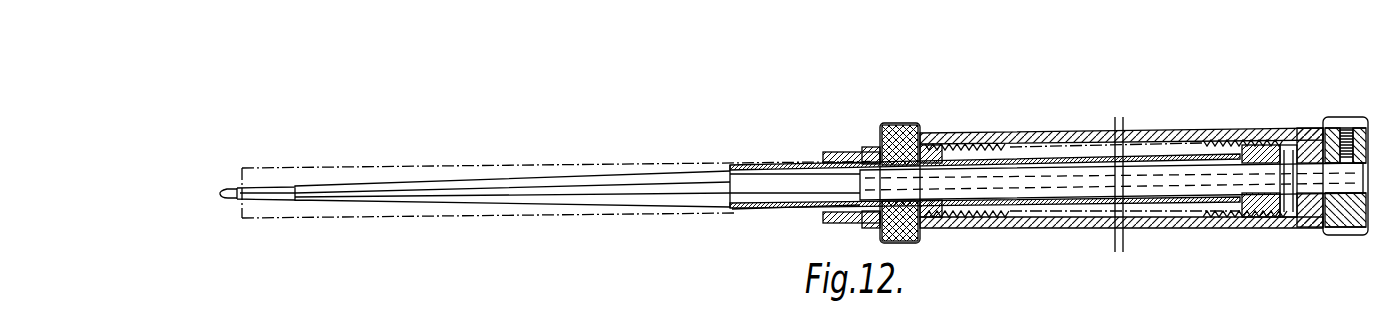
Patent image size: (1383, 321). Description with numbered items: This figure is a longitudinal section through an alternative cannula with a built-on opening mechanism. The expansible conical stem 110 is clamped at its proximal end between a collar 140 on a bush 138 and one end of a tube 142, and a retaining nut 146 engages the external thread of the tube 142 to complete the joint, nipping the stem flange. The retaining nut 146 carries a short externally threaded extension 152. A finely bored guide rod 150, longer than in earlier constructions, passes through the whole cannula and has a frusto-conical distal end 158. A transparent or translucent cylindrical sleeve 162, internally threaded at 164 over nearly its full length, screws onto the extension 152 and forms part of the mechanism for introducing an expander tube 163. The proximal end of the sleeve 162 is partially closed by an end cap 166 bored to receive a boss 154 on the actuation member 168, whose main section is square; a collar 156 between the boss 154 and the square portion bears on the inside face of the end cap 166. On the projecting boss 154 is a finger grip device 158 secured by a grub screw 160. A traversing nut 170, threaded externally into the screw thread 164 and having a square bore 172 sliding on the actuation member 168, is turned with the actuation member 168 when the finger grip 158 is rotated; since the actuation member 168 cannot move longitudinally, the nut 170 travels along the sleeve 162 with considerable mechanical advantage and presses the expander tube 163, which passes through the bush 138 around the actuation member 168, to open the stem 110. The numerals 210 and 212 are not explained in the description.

The expansible conical stem 110 is at (488, 178).
The bush 138 is at (868, 152).
The collar 140 is at (870, 150).
The tube 142 is at (800, 148).
The retaining nut 146 is at (907, 127).
The guide rod 150 is at (513, 190).
The extension 152 is at (933, 143).
The boss 154 is at (1345, 196).
The collar 156 is at (1290, 210).
The finger grip device 158 is at (232, 189).
The grub screw 160 is at (1343, 132).
The cylindrical sleeve 162 is at (1028, 131).
The expander tube 163 is at (785, 214).
The screw thread 164 is at (1212, 128).
The end cap 166 is at (1310, 128).
The actuation member 168 is at (1016, 190).
The traversing nut 170 is at (1252, 218).
The square bore 172 is at (1262, 145).
The reference label 210 is at (1334, 307).
The reference label 212 is at (1299, 311).